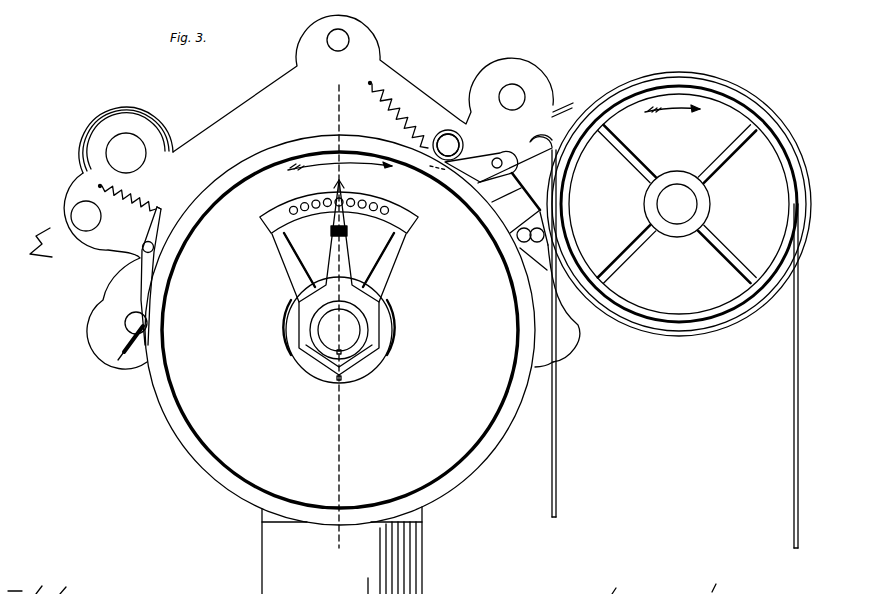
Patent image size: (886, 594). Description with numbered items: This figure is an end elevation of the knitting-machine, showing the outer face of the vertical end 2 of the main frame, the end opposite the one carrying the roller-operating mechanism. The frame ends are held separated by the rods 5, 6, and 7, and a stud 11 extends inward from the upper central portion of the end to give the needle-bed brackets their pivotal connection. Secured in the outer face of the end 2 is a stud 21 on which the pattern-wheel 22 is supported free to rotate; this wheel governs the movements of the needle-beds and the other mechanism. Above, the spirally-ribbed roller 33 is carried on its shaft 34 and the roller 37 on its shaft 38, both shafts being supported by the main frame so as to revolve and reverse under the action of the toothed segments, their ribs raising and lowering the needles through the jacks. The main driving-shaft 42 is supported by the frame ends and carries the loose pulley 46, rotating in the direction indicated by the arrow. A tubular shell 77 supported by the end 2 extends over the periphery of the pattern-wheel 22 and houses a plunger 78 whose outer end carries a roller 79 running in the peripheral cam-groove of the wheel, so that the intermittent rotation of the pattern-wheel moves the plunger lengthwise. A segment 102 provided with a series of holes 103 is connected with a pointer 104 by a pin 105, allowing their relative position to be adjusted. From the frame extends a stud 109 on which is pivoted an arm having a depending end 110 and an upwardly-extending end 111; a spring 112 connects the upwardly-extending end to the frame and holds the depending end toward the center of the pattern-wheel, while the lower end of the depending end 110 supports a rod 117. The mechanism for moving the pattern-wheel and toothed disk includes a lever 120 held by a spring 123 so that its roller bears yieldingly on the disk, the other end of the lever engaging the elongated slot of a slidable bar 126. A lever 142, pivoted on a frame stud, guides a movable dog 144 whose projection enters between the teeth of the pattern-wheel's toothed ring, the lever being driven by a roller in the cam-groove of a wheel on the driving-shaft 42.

The vertical end 2 is at (291, 192).
The rod 5 is at (86, 216).
The rod 6 is at (512, 97).
The rod 7 is at (530, 372).
The stud 11 is at (338, 40).
The stud 21 is at (339, 340).
The pattern-wheel 22 is at (340, 320).
The roller 33 is at (125, 110).
The shaft 34 is at (126, 153).
The roller 37 is at (564, 104).
The shaft 38 is at (536, 136).
The main driving-shaft 42 is at (677, 204).
The loose pulley 46 is at (679, 204).
The tubular shell 77 is at (459, 139).
The plunger 78 is at (463, 146).
The roller 79 is at (445, 174).
The segment 102 is at (341, 212).
The holes 103 is at (373, 202).
The pointer 104 is at (339, 281).
The pin 105 is at (335, 186).
The stud 109 is at (138, 239).
The depending end 110 is at (141, 276).
The upwardly-extending end 111 is at (171, 201).
The spring 112 is at (128, 193).
The rod 117 is at (130, 336).
The lever 120 is at (481, 166).
The spring 123 is at (399, 115).
The slidable bar 126 is at (515, 179).
The lever 142 is at (538, 162).
The movable dog 144 is at (526, 235).